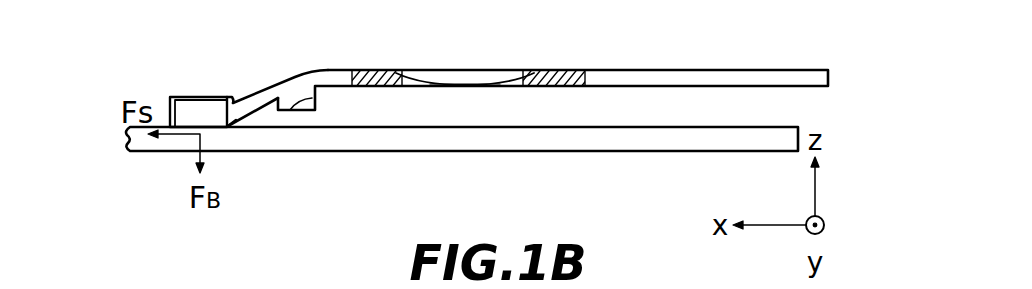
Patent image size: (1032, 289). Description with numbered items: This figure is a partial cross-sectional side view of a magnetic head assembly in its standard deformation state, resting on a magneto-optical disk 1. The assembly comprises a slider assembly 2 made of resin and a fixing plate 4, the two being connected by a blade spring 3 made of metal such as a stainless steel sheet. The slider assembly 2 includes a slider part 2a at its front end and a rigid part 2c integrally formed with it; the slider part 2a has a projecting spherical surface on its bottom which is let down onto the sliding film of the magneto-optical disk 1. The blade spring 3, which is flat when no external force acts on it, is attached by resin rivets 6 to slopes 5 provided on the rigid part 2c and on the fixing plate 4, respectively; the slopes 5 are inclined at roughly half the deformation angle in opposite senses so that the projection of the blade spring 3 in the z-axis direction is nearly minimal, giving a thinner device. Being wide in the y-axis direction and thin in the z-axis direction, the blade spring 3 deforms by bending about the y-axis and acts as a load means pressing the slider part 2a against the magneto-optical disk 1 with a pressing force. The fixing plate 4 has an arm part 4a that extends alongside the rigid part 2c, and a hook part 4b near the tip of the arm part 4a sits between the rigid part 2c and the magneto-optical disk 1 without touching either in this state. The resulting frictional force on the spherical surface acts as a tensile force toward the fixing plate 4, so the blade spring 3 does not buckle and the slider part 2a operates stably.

The magneto-optical disk 1 is at (577, 153).
The slider assembly 2 is at (262, 100).
The slider part 2a is at (170, 105).
The rigid part 2c is at (245, 112).
The blade spring 3 is at (422, 82).
The fixing plate 4 is at (688, 70).
The arm part 4a is at (497, 70).
The hook part 4b is at (315, 110).
The slopes 5 is at (377, 72).
The resin rivets 6 is at (393, 72).